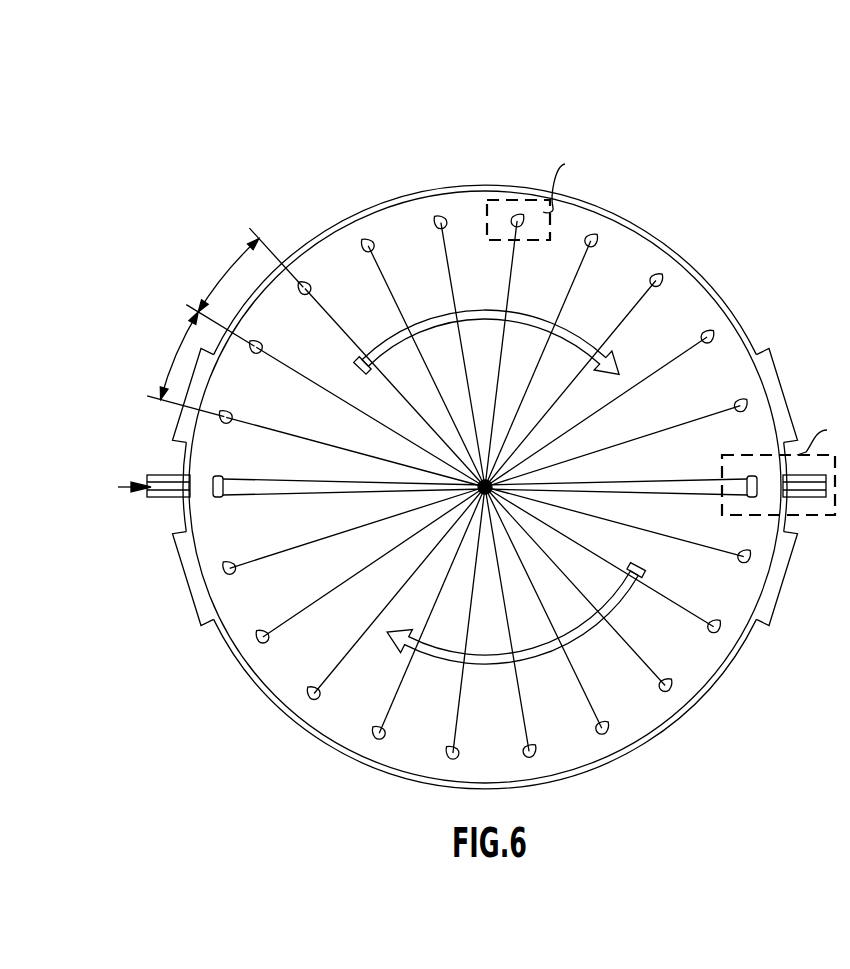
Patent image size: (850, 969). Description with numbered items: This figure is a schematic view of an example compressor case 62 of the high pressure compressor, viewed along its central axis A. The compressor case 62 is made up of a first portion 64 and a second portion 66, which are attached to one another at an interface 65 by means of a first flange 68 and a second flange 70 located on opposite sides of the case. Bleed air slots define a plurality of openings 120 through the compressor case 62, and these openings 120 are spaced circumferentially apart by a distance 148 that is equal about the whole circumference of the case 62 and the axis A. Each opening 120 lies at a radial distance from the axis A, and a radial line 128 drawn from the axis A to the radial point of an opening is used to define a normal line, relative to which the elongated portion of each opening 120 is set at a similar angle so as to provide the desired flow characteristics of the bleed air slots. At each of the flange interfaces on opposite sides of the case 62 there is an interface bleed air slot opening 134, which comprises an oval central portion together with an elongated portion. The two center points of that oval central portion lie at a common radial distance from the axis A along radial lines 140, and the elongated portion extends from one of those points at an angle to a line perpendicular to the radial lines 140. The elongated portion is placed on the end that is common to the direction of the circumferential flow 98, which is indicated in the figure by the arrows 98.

The compressor case 62 is at (664, 129).
The first portion 64 is at (625, 217).
The second portion 66 is at (676, 722).
The interface 65 is at (128, 487).
The first flange 68 is at (162, 474).
The second flange 70 is at (162, 498).
The circumferential flow 98 is at (388, 340).
The openings 120 is at (305, 284).
The radial line 128 is at (508, 300).
The interface bleed air slot opening 134 is at (752, 498).
The radial lines 140 is at (632, 472).
The distance 148 is at (228, 271).
The axis A is at (500, 486).